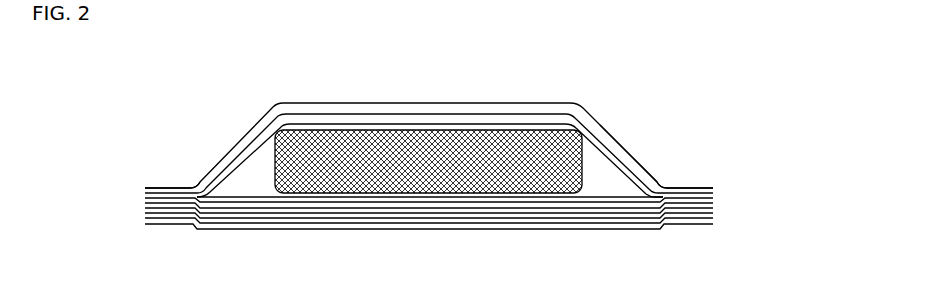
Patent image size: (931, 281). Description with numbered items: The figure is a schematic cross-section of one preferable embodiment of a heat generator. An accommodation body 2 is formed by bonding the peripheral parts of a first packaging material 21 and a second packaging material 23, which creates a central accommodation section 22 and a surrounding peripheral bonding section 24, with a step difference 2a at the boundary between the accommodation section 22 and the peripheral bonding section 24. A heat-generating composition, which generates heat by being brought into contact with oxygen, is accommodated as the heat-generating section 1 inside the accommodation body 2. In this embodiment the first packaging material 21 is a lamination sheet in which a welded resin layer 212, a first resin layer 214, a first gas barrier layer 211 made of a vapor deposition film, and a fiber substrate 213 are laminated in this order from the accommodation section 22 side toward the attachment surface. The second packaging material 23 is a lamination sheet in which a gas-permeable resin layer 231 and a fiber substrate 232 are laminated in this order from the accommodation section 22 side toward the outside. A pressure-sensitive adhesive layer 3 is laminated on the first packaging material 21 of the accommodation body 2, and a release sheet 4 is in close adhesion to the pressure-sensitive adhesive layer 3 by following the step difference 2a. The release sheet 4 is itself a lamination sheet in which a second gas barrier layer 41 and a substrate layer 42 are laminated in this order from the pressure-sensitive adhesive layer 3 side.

The heat-generating section 1 is at (345, 128).
The accommodation body 2 is at (608, 123).
The step difference 2a is at (668, 187).
The accommodation section 22 is at (420, 123).
The peripheral bonding section 24 is at (147, 176).
The second packaging material 23 is at (380, 163).
The fiber substrate 232 is at (140, 192).
The gas-permeable resin layer 231 is at (143, 200).
The release sheet 4 is at (234, 238).
The second gas barrier layer 41 is at (145, 225).
The substrate layer 42 is at (145, 230).
The first packaging material 21 is at (630, 190).
The welded resin layer 212 is at (718, 200).
The first resin layer 214 is at (718, 205).
The first gas barrier layer 211 is at (718, 210).
The fiber substrate 213 is at (607, 218).
The pressure-sensitive adhesive layer 3 is at (718, 222).